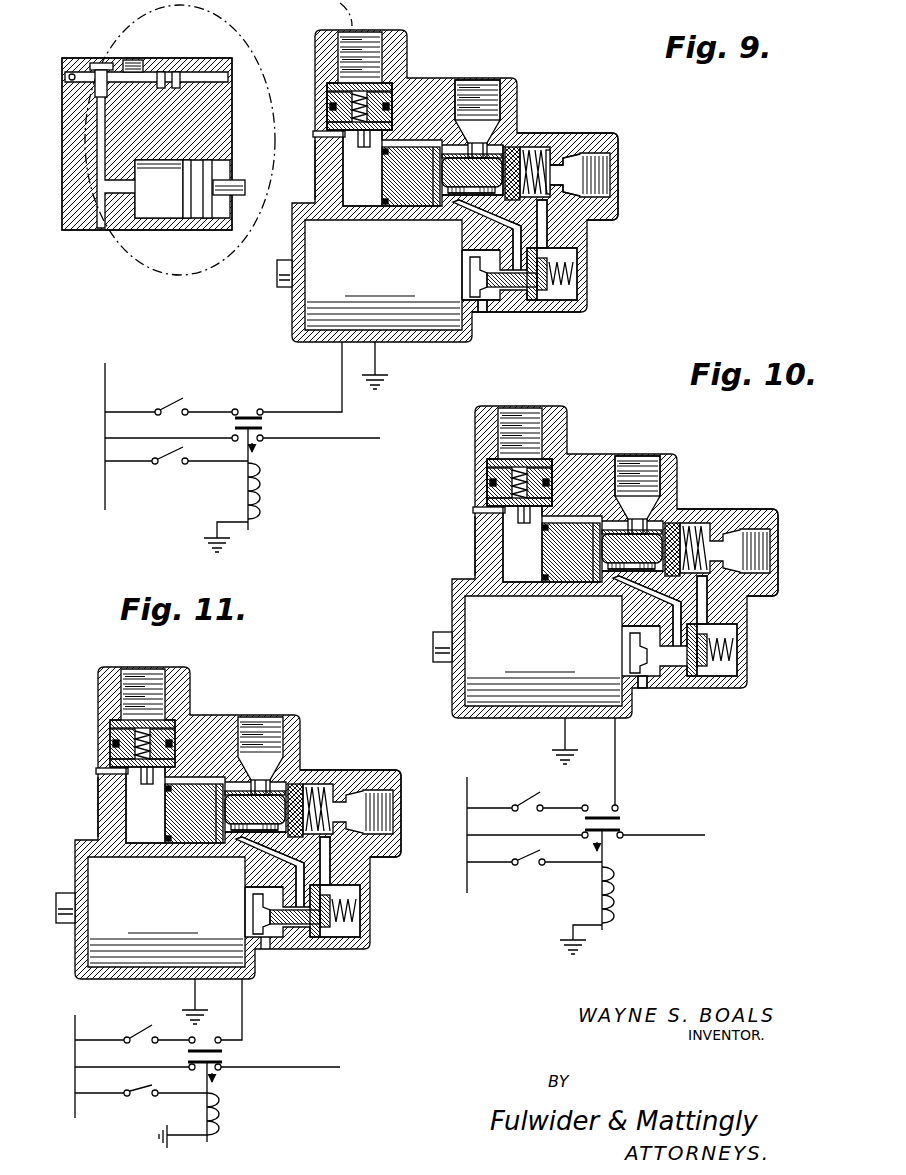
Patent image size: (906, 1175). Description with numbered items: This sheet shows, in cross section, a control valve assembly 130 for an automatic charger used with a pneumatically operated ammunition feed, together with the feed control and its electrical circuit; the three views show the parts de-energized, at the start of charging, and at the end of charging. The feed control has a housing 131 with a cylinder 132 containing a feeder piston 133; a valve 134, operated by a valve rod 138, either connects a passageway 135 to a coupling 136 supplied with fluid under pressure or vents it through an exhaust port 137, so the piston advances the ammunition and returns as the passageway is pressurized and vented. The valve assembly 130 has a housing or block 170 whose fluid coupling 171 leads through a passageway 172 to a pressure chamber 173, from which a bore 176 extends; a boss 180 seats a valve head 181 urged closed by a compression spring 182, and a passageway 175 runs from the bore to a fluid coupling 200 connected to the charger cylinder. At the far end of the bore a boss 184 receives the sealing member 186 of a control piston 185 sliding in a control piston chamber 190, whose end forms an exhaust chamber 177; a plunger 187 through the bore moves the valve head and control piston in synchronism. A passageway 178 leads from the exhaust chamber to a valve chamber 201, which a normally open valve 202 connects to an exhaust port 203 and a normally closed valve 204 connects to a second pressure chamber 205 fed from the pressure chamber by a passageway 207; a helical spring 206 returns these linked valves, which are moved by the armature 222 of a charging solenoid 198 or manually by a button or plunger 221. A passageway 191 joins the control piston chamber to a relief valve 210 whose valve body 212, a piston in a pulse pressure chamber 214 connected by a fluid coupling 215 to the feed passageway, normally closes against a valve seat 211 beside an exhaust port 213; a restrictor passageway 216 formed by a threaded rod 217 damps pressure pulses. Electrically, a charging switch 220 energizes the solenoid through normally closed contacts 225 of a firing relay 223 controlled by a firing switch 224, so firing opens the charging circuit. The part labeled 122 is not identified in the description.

In FIG. 10, the shaft 122 is at (423, 647).
In FIG. 11, the shaft 122 is at (54, 895).
In FIG. 9, the valve assembly 130 is at (455, 186).
In FIG. 10, the valve assembly 130 is at (615, 562).
In FIG. 11, the valve assembly 130 is at (238, 823).
In FIG. 9, the housing 131 is at (147, 120).
In FIG. 9, the cylinder 132 is at (185, 208).
In FIG. 9, the feeder piston 133 is at (195, 208).
In FIG. 9, the valve 134 is at (103, 60).
In FIG. 9, the passageway 135 is at (133, 144).
In FIG. 9, the coupling 136 is at (147, 47).
In FIG. 9, the exhaust port 137 is at (65, 56).
In FIG. 9, the valve rod 138 is at (192, 60).
In FIG. 9, the housing or block 170 is at (596, 171).
In FIG. 10, the housing or block 170 is at (740, 539).
In FIG. 11, the housing or block 170 is at (350, 813).
In FIG. 9, the fluid coupling 171 is at (628, 181).
In FIG. 10, the fluid coupling 171 is at (783, 563).
In FIG. 11, the fluid coupling 171 is at (406, 812).
In FIG. 9, the passageway 172 is at (584, 154).
In FIG. 9, the pressure chamber 173 is at (559, 153).
In FIG. 9, the passageway 175 is at (478, 85).
In FIG. 10, the passageway 175 is at (661, 454).
In FIG. 9, the bore 176 is at (528, 141).
In FIG. 9, the exhaust chamber 177 is at (464, 235).
In FIG. 10, the exhaust chamber 177 is at (630, 611).
In FIG. 11, the exhaust chamber 177 is at (270, 872).
In FIG. 9, the passageway 178 is at (460, 246).
In FIG. 10, the passageway 178 is at (620, 626).
In FIG. 11, the passageway 178 is at (243, 875).
In FIG. 9, the boss 180 is at (496, 133).
In FIG. 10, the boss 180 is at (657, 508).
In FIG. 11, the boss 180 is at (255, 793).
In FIG. 9, the valve head 181 is at (554, 143).
In FIG. 10, the valve head 181 is at (715, 518).
In FIG. 11, the valve head 181 is at (334, 782).
In FIG. 9, the compression spring 182 is at (564, 144).
In FIG. 10, the compression spring 182 is at (711, 529).
In FIG. 11, the compression spring 182 is at (347, 790).
In FIG. 9, the boss 184 is at (452, 125).
In FIG. 10, the boss 184 is at (632, 479).
In FIG. 11, the boss 184 is at (260, 787).
In FIG. 9, the control piston 185 is at (396, 176).
In FIG. 10, the control piston 185 is at (556, 552).
In FIG. 11, the control piston 185 is at (140, 813).
In FIG. 9, the sealing member 186 is at (452, 155).
In FIG. 10, the sealing member 186 is at (614, 531).
In FIG. 11, the sealing member 186 is at (236, 793).
In FIG. 9, the plunger 187 is at (434, 216).
In FIG. 10, the plunger 187 is at (658, 504).
In FIG. 11, the plunger 187 is at (284, 772).
In FIG. 9, the control piston chamber 190 is at (319, 187).
In FIG. 10, the control piston chamber 190 is at (487, 544).
In FIG. 11, the control piston chamber 190 is at (108, 805).
In FIG. 9, the passageway 191 is at (302, 170).
In FIG. 10, the passageway 191 is at (458, 546).
In FIG. 11, the passageway 191 is at (167, 761).
In FIG. 9, the charging solenoid 198 is at (356, 315).
In FIG. 10, the charging solenoid 198 is at (516, 687).
In FIG. 11, the charging solenoid 198 is at (139, 948).
In FIG. 9, the fluid coupling 200 is at (501, 86).
In FIG. 10, the fluid coupling 200 is at (644, 448).
In FIG. 11, the fluid coupling 200 is at (284, 716).
In FIG. 9, the valve chamber 201 is at (521, 328).
In FIG. 9, the normally open valve 202 is at (452, 276).
In FIG. 10, the normally open valve 202 is at (643, 689).
In FIG. 11, the normally open valve 202 is at (274, 938).
In FIG. 9, the exhaust port 203 is at (488, 335).
In FIG. 10, the exhaust port 203 is at (666, 701).
In FIG. 9, the normally closed valve 204 is at (562, 296).
In FIG. 10, the normally closed valve 204 is at (725, 675).
In FIG. 11, the normally closed valve 204 is at (345, 929).
In FIG. 9, the second pressure chamber 205 is at (588, 273).
In FIG. 10, the second pressure chamber 205 is at (750, 644).
In FIG. 11, the second pressure chamber 205 is at (370, 909).
In FIG. 9, the helical spring 206 is at (588, 274).
In FIG. 10, the helical spring 206 is at (750, 650).
In FIG. 11, the helical spring 206 is at (370, 911).
In FIG. 9, the passageway 207 is at (588, 224).
In FIG. 10, the passageway 207 is at (750, 600).
In FIG. 11, the passageway 207 is at (370, 861).
In FIG. 9, the relief valve 210 is at (337, 106).
In FIG. 10, the relief valve 210 is at (482, 488).
In FIG. 9, the valve seat 211 is at (316, 136).
In FIG. 10, the valve seat 211 is at (489, 510).
In FIG. 11, the valve seat 211 is at (90, 779).
In FIG. 9, the valve body 212 is at (387, 77).
In FIG. 10, the valve body 212 is at (494, 484).
In FIG. 11, the valve body 212 is at (115, 742).
In FIG. 9, the exhaust port 213 is at (341, 124).
In FIG. 10, the exhaust port 213 is at (519, 502).
In FIG. 11, the exhaust port 213 is at (111, 764).
In FIG. 9, the pulse pressure chamber 214 is at (339, 71).
In FIG. 10, the pulse pressure chamber 214 is at (494, 457).
In FIG. 11, the pulse pressure chamber 214 is at (142, 724).
In FIG. 9, the fluid coupling 215 is at (394, 47).
In FIG. 10, the fluid coupling 215 is at (536, 416).
In FIG. 11, the fluid coupling 215 is at (160, 677).
In FIG. 9, the restrictor passageway 216 is at (398, 87).
In FIG. 10, the restrictor passageway 216 is at (481, 481).
In FIG. 11, the restrictor passageway 216 is at (142, 745).
In FIG. 9, the threaded rod 217 is at (367, 150).
In FIG. 10, the threaded rod 217 is at (561, 477).
In FIG. 11, the threaded rod 217 is at (147, 775).
In FIG. 9, the charging switch 220 is at (183, 393).
In FIG. 10, the charging switch 220 is at (515, 789).
In FIG. 11, the charging switch 220 is at (129, 1027).
In FIG. 9, the button or plunger 221 is at (260, 288).
In FIG. 9, the armature 222 is at (477, 275).
In FIG. 11, the armature 222 is at (282, 912).
In FIG. 9, the firing relay 223 is at (283, 481).
In FIG. 10, the firing relay 223 is at (632, 882).
In FIG. 11, the firing relay 223 is at (246, 1104).
In FIG. 9, the firing switch 224 is at (162, 475).
In FIG. 10, the firing switch 224 is at (517, 874).
In FIG. 11, the firing switch 224 is at (124, 1110).
In FIG. 9, the normally closed contacts 225 is at (269, 410).
In FIG. 10, the normally closed contacts 225 is at (622, 809).
In FIG. 11, the normally closed contacts 225 is at (239, 1040).